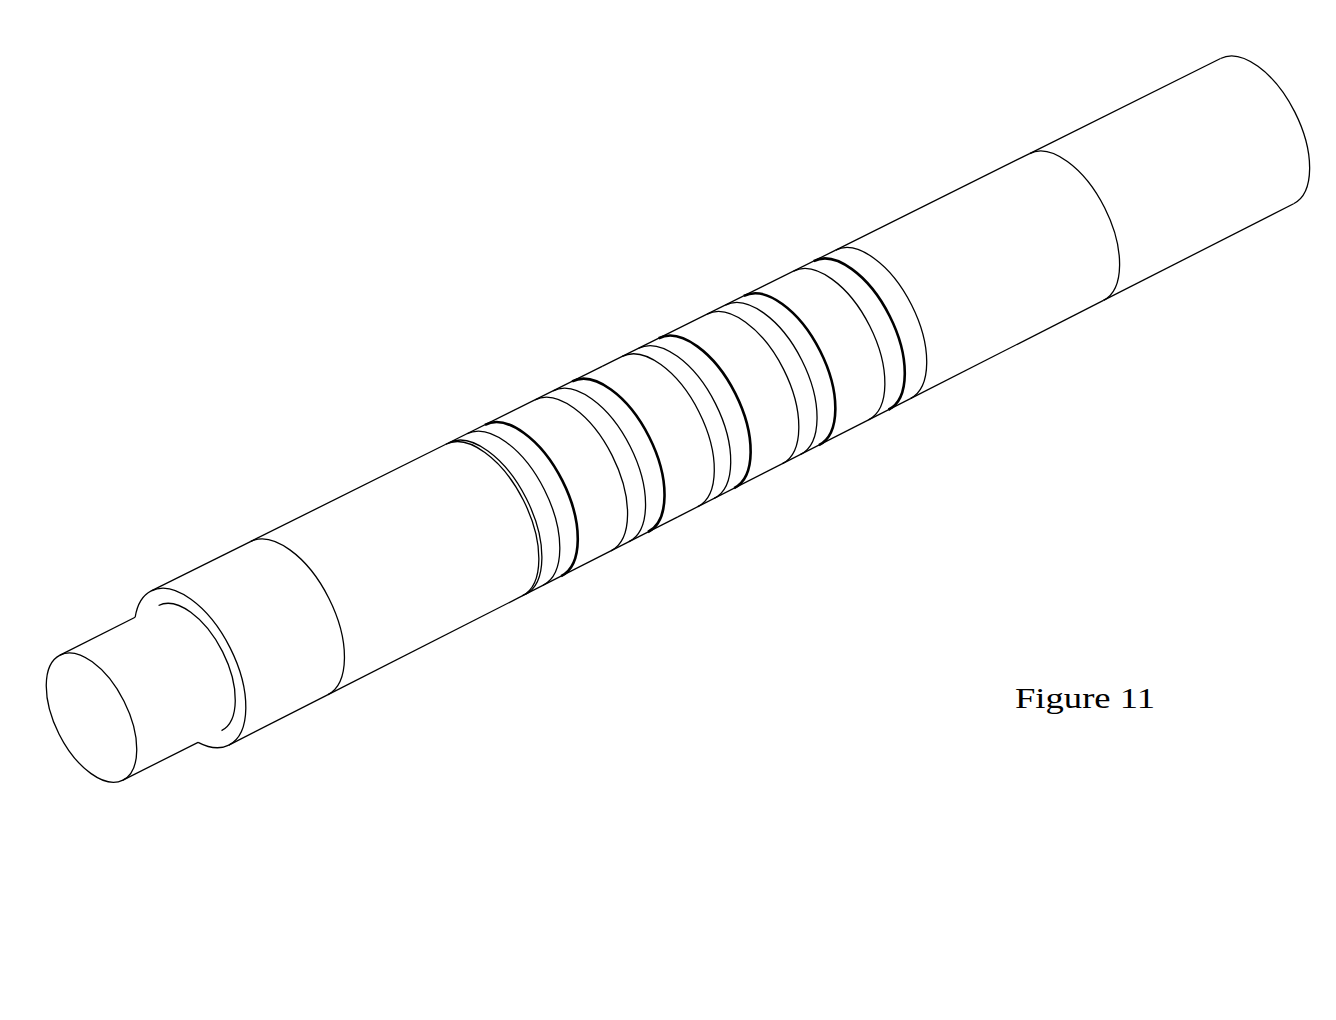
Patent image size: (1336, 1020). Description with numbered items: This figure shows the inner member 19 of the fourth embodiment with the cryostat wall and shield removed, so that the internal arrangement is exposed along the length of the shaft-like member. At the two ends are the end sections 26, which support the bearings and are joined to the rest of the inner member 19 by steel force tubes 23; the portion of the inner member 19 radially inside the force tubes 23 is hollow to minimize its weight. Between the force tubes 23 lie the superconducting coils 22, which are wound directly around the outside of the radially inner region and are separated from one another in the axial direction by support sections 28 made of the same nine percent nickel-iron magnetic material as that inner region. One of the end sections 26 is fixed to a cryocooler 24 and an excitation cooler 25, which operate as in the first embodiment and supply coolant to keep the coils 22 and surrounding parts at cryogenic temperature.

The inner member 19 is at (682, 436).
The superconducting coils 22 is at (580, 405).
The steel force tubes 23 is at (420, 598).
The cryocooler 24 is at (173, 727).
The excitation cooler 25 is at (167, 720).
The end sections 26 is at (285, 673).
The support sections 28 is at (870, 265).